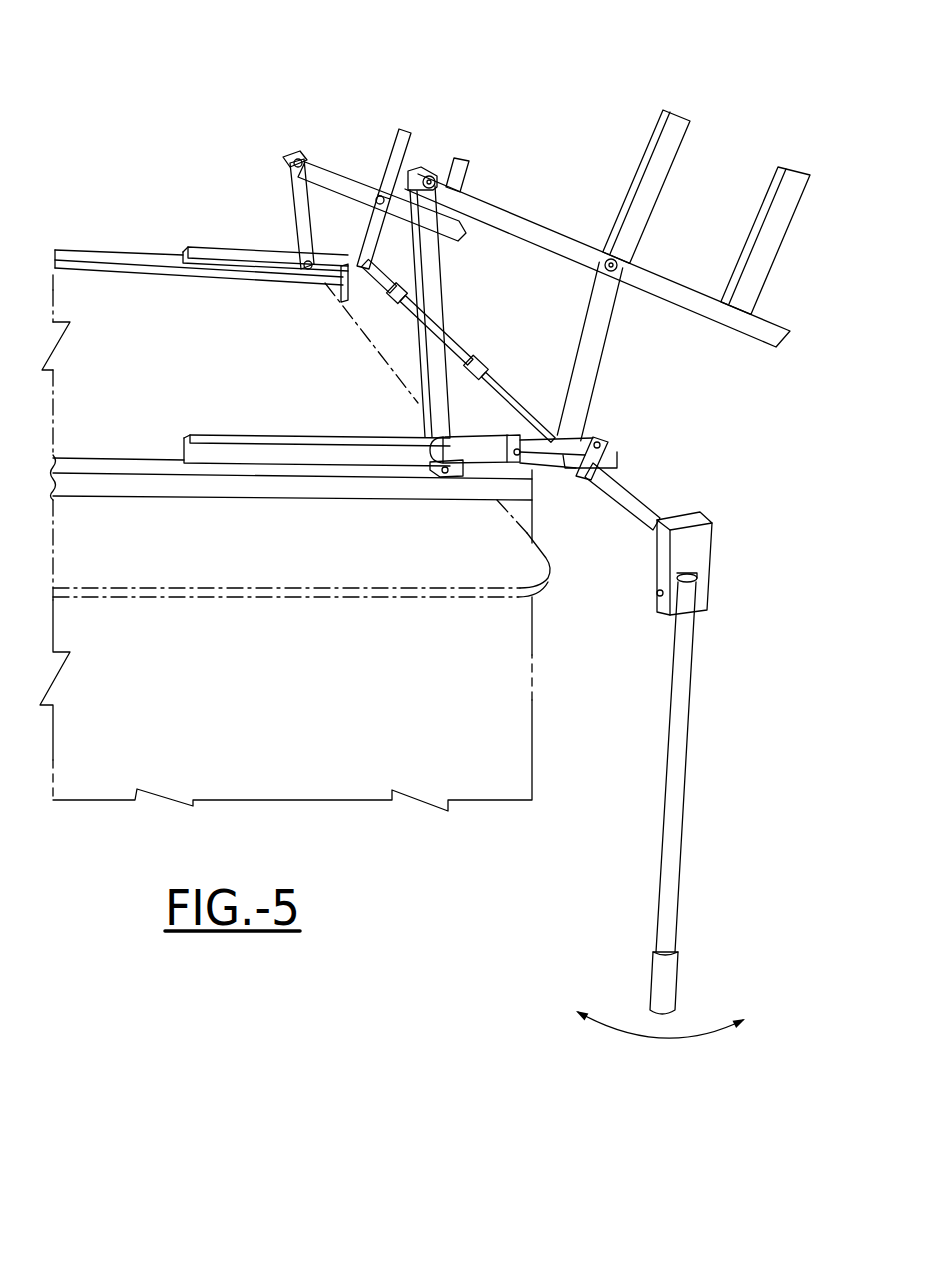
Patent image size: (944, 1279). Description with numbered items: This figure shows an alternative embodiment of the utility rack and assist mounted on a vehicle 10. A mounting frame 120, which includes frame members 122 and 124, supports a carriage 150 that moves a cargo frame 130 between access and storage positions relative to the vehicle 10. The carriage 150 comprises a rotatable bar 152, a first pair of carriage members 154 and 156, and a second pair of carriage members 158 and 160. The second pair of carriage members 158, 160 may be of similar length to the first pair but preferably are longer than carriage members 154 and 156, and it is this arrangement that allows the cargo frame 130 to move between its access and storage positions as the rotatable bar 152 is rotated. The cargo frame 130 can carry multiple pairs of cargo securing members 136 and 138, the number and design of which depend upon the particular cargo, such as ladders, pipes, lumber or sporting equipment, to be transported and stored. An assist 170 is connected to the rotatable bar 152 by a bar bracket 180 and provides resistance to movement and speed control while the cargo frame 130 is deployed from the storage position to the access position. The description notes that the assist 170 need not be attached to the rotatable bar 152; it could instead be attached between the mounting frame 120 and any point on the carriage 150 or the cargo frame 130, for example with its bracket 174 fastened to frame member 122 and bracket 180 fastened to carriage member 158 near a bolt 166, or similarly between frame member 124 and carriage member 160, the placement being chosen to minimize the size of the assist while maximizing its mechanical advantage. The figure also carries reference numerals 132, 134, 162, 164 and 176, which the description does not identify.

The vehicle 10 is at (546, 656).
The mounting frame 120 is at (221, 504).
The frame member 122 is at (226, 436).
The frame member 124 is at (197, 246).
The cargo frame 130 is at (391, 100).
The cross bar 132 is at (770, 338).
The side member 134 is at (332, 156).
The cargo securing member 136 is at (677, 112).
The cargo securing member 138 is at (409, 130).
The carriage 150 is at (467, 343).
The rotatable bar 152 is at (630, 490).
The carriage member 154 is at (600, 354).
The carriage member 156 is at (372, 229).
The carriage member 158 is at (421, 362).
The carriage member 160 is at (300, 183).
The actuating rod 162 is at (693, 656).
The direction of rotation 164 is at (688, 1043).
The bolt 166 is at (251, 305).
The assist 170 is at (488, 470).
The bracket 174 is at (433, 468).
The lever 176 is at (567, 457).
The bar bracket 180 is at (610, 452).